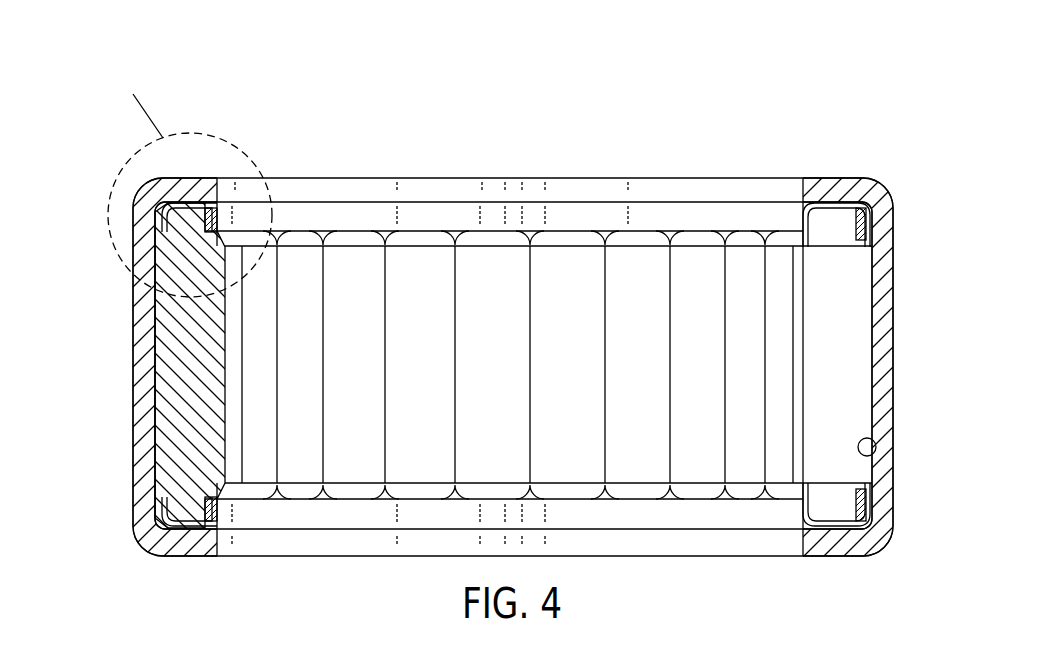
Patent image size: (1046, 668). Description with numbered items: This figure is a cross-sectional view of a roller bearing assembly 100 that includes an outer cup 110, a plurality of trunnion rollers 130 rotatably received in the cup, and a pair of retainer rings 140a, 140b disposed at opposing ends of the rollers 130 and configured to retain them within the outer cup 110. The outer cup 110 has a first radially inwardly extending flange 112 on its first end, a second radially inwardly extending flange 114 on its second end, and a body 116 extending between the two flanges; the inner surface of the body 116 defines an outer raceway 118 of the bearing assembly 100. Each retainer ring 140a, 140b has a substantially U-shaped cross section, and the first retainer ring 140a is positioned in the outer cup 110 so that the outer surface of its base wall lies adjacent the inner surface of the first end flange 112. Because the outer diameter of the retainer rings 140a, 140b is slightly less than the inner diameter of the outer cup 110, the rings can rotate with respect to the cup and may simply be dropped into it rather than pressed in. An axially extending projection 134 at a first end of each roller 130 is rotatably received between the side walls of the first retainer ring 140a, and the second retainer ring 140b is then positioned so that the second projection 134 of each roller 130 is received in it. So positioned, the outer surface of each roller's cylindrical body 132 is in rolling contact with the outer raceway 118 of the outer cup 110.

The roller bearing assembly 100 is at (279, 59).
The outer cup 110 is at (112, 406).
The first radially inwardly extending flange 112 is at (840, 557).
The second radially inwardly extending flange 114 is at (828, 178).
The body 116 is at (133, 340).
The outer raceway 118 is at (876, 441).
The trunnion rollers 130 is at (855, 384).
The cylindrical body 132 is at (880, 320).
The axially extending projection 134 is at (877, 193).
The first retainer ring 140a is at (323, 512).
The second retainer ring 140b is at (322, 213).